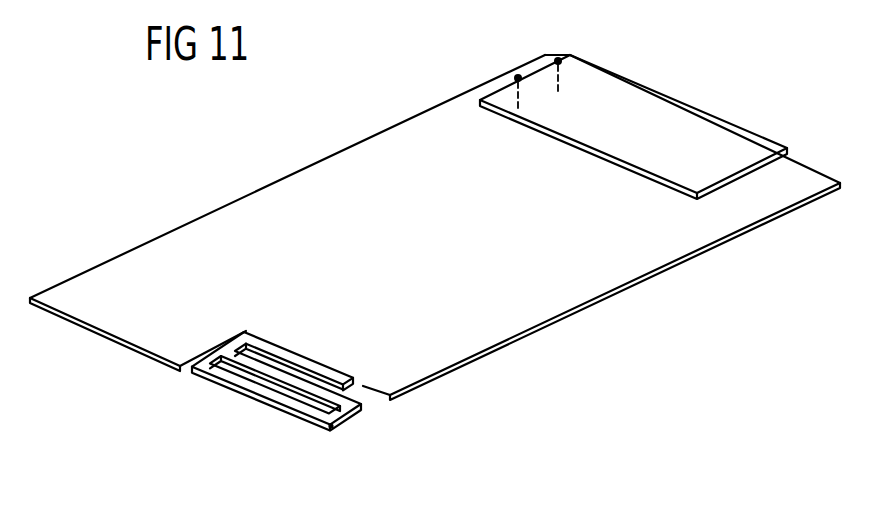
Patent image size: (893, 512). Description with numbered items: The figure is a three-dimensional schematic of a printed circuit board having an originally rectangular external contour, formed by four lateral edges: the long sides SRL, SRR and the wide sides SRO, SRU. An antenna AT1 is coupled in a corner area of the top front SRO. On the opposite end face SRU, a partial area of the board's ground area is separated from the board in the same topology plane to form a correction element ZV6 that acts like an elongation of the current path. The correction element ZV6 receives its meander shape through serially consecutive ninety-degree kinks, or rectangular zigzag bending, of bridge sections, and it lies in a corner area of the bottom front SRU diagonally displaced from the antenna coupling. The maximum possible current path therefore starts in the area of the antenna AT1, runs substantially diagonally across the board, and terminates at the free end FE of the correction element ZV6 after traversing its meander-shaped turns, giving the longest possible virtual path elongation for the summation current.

The lateral edge SRL is at (287, 176).
The lateral edge SRO is at (709, 119).
The lateral edge SRR is at (615, 290).
The lateral edge SRU is at (105, 352).
The antenna AT1 is at (633, 120).
The correction element ZV6 is at (276, 408).
The free end FE is at (358, 447).